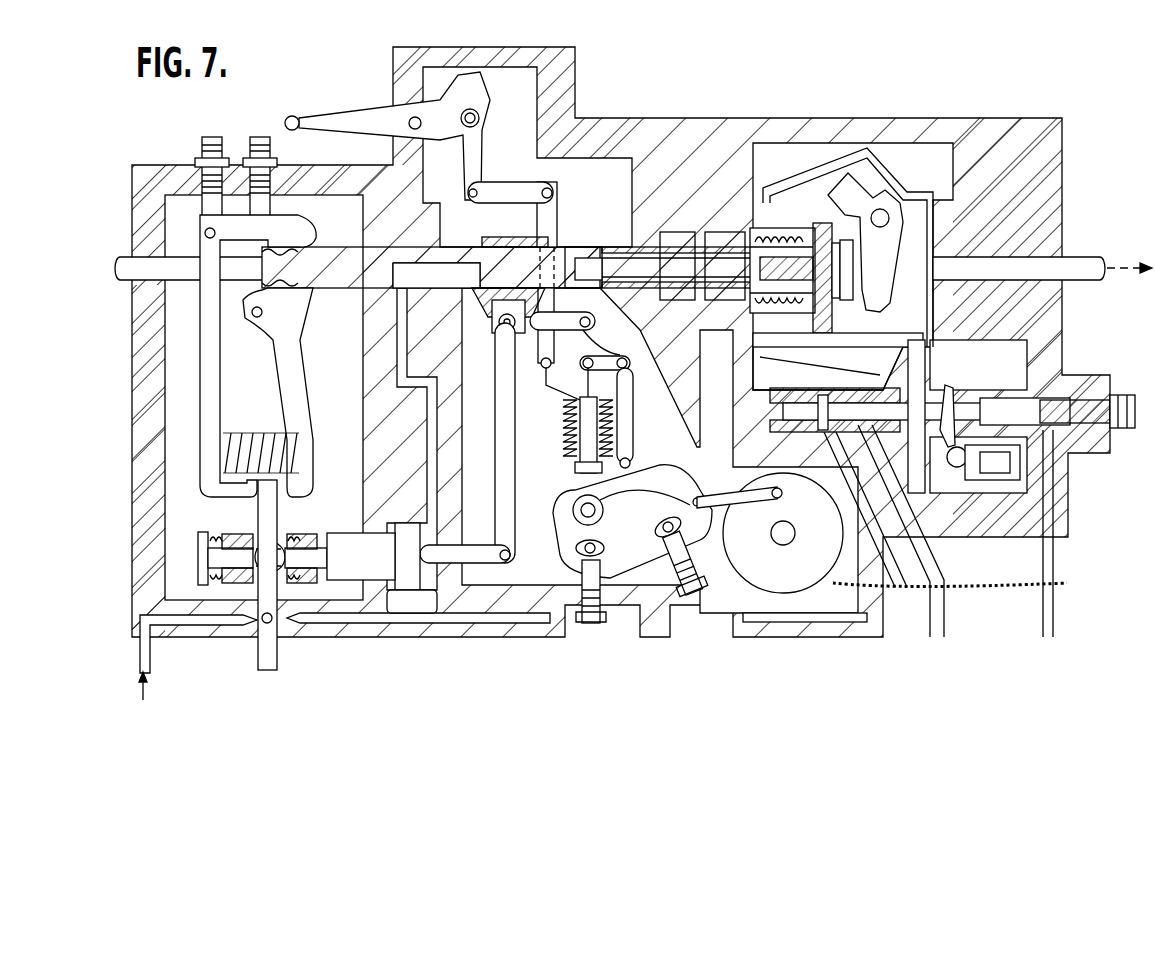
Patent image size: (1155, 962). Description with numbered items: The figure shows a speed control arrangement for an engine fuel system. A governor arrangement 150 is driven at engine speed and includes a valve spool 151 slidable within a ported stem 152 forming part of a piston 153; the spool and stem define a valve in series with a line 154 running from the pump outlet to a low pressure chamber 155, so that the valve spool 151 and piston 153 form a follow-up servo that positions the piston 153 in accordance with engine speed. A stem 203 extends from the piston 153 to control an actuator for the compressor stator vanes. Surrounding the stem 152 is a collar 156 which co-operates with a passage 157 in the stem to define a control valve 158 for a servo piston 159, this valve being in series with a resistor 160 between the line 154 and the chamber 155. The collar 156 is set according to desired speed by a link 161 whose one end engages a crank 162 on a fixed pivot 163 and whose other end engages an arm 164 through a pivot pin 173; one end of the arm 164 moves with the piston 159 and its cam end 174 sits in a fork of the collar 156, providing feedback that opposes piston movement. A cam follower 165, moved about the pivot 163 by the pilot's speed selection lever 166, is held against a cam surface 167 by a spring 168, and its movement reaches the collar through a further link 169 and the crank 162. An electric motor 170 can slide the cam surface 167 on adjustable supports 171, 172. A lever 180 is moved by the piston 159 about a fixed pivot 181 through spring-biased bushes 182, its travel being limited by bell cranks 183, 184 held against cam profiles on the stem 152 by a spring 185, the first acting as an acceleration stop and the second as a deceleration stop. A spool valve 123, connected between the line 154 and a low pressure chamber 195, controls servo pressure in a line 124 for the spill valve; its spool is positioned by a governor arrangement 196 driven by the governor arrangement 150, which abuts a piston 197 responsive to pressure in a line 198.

The valve 123 is at (870, 415).
The line 124 is at (944, 622).
The governor arrangement 150 is at (912, 160).
The valve spool 151 is at (815, 228).
The ported stem 152 is at (740, 238).
The piston 153 is at (691, 236).
The line 154 is at (145, 657).
The low pressure chamber 155 is at (598, 160).
The collar 156 is at (482, 242).
The passage 157 is at (476, 268).
The control valve 158 is at (503, 236).
The servo piston 159 is at (410, 580).
The resistor 160 is at (440, 602).
The link 161 is at (572, 310).
The crank 162 is at (606, 345).
The fixed pivot 163 is at (600, 368).
The arm 164 is at (506, 452).
The cam follower 165 is at (577, 470).
The pilot's speed selection lever 166 is at (348, 120).
The cam surface 167 is at (649, 498).
The spring 168 is at (563, 412).
The further link 169 is at (631, 410).
The electric motor 170 is at (778, 578).
The adjustable support 171 is at (590, 560).
The adjustable support 172 is at (669, 533).
The pivot pin 173 is at (510, 333).
The cam end 174 is at (497, 325).
The lever 180 is at (280, 656).
The fixed pivot 181 is at (263, 624).
The spring-biased bushes 182 is at (232, 540).
The bell crank 183 is at (208, 375).
The bell crank 184 is at (300, 396).
The spring 185 is at (248, 430).
The low pressure chamber 195 is at (935, 155).
The governor arrangement 196 is at (1025, 453).
The piston 197 is at (1010, 410).
The line 198 is at (1054, 617).
The stem 203 is at (127, 262).